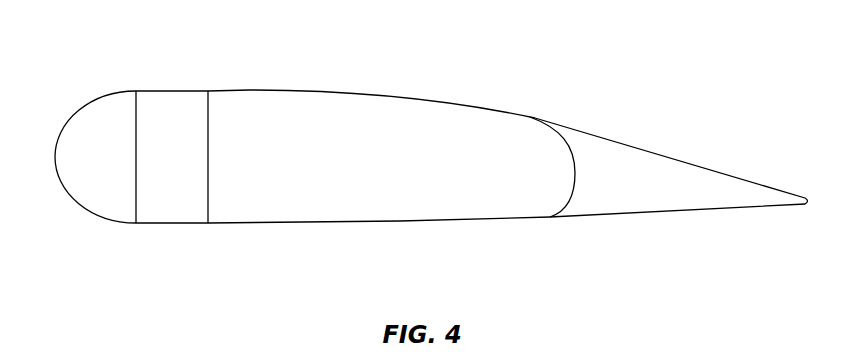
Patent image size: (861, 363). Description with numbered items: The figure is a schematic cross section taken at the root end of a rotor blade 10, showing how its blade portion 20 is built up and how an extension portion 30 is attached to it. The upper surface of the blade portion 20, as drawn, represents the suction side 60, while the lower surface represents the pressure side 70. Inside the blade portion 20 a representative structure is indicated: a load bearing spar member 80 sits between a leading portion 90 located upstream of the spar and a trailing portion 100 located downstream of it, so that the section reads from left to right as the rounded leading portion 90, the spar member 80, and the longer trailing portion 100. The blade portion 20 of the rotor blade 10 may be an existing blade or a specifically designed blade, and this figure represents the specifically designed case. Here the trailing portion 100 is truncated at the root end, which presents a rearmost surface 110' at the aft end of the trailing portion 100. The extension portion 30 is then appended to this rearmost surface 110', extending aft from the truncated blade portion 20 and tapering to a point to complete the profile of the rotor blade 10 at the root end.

The rotor blade 10 is at (105, 63).
The blade portion 20 is at (160, 237).
The extension portion 30 is at (665, 232).
The suction side 60 is at (391, 91).
The pressure side 70 is at (410, 224).
The load bearing spar member 80 is at (185, 168).
The leading portion 90 is at (110, 168).
The trailing portion 100 is at (338, 168).
The rearmost surface 110' is at (615, 167).